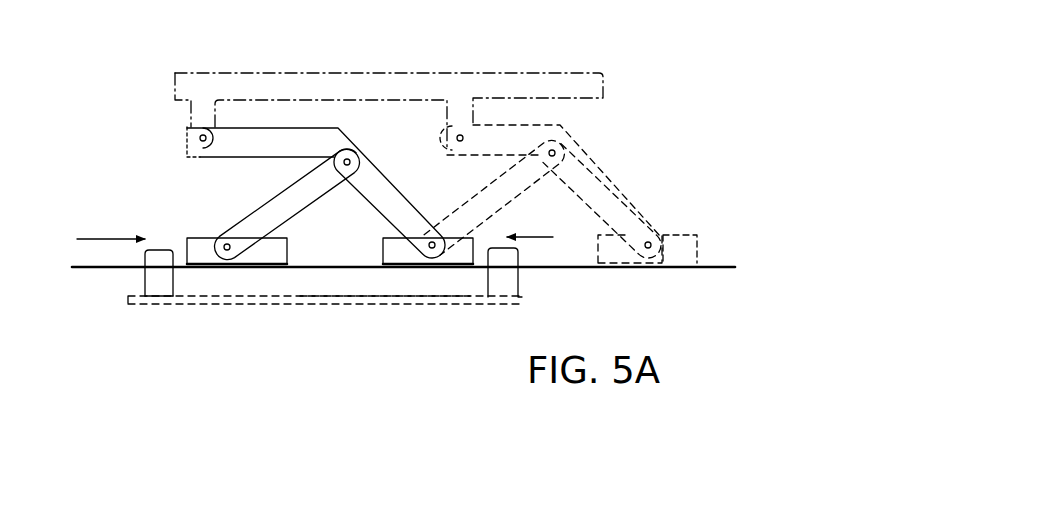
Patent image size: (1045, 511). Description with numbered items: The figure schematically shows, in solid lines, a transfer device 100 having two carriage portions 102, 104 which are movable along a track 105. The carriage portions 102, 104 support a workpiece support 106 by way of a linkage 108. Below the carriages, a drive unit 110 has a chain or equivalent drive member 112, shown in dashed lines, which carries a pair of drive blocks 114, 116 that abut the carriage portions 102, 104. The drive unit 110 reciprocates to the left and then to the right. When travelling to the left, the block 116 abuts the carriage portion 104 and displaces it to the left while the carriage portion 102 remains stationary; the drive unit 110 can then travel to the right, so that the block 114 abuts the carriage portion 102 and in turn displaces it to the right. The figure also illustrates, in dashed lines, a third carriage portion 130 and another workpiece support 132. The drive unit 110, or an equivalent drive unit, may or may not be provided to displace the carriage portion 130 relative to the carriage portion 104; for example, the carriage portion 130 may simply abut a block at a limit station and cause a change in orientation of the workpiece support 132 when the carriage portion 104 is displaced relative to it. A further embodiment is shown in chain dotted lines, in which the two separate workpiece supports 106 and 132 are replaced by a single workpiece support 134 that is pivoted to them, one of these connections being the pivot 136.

The transfer device 100 is at (93, 124).
The carriage portion 102 is at (195, 239).
The carriage portion 104 is at (383, 240).
The track 105 is at (721, 265).
The workpiece support 106 is at (256, 173).
The linkage 108 is at (355, 120).
The drive unit 110 is at (258, 316).
The drive member 112 is at (410, 306).
The drive block 114 is at (143, 281).
The drive block 116 is at (519, 279).
The third carriage portion 130 is at (187, 141).
The workpiece support 132 is at (523, 122).
The single workpiece support 134 is at (516, 73).
The pivot 136 is at (443, 138).